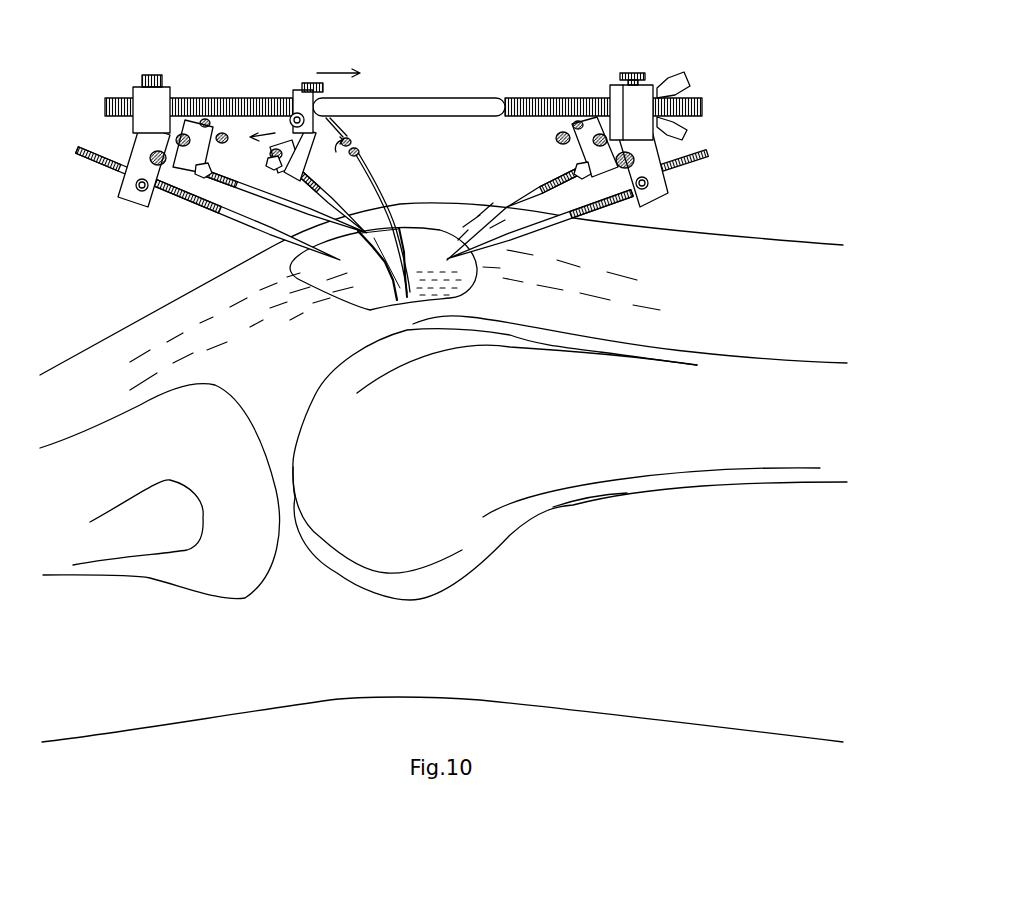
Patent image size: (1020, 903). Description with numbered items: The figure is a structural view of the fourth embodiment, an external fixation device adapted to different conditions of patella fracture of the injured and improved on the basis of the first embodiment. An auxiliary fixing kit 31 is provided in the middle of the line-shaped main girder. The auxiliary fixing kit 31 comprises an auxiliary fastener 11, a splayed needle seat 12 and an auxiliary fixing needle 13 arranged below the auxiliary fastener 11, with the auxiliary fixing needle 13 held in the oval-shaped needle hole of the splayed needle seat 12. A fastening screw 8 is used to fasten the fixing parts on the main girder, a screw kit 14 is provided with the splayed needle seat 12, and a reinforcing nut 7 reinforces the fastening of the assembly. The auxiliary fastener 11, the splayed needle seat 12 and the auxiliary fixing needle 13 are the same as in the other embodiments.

The splayed needle seat 12 is at (245, 98).
The screw kit 14 is at (293, 140).
The auxiliary fastener 11 is at (303, 100).
The fastening screw 8 is at (313, 82).
The auxiliary fixing kit 31 is at (333, 93).
The reinforcing nut 7 is at (580, 158).
The auxiliary fixing needle 13 is at (327, 217).